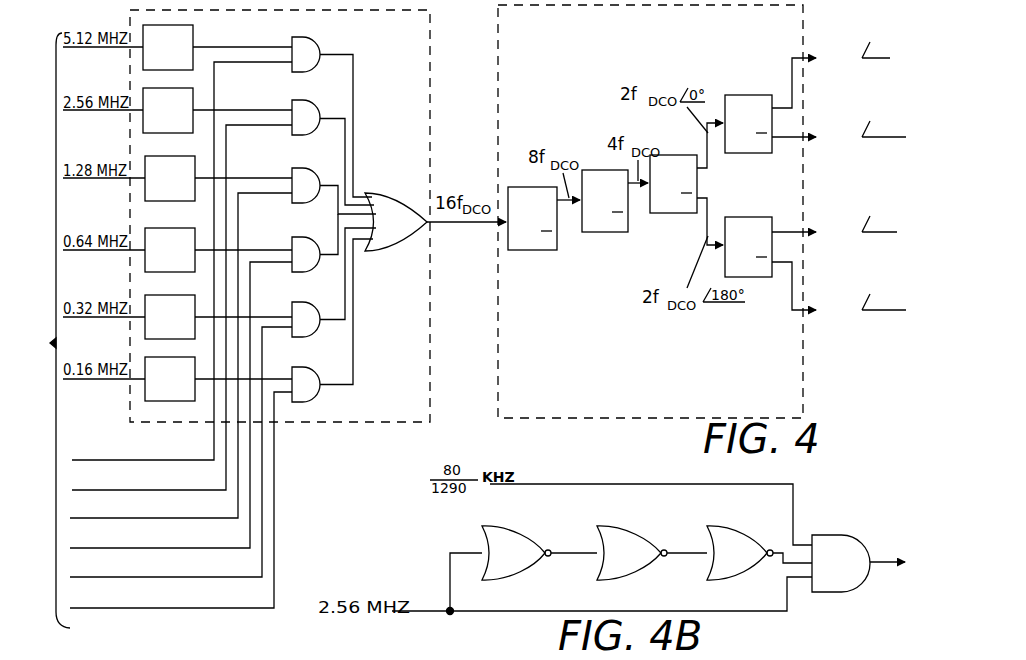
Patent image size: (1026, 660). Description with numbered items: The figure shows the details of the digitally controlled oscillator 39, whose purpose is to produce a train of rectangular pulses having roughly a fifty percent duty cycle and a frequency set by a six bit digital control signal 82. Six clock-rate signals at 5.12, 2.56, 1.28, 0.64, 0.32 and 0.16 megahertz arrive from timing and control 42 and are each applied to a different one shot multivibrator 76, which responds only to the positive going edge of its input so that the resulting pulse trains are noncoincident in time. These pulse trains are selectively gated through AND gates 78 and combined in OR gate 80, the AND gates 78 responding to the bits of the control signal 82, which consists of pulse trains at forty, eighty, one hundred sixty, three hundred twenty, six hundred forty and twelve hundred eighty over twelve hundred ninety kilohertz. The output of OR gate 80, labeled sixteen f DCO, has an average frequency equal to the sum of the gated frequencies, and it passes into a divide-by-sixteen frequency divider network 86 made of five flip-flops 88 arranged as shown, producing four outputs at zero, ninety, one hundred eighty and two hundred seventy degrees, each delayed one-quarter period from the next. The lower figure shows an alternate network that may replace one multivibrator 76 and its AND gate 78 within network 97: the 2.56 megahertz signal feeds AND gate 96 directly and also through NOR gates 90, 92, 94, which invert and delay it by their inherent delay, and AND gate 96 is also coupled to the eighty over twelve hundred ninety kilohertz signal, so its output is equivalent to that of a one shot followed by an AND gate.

In FIG. 4, the digitally controlled oscillator 39 is at (118, 17).
In FIG. 4, the timing and control 42 is at (49, 330).
In FIG. 4, the one shot multivibrator 76 is at (193, 40).
In FIG. 4, the AND gate 78 is at (312, 37).
In FIG. 4, the OR gate 80 is at (385, 193).
In FIG. 4B, the OR gate 80 is at (929, 568).
In FIG. 4, the six bit digital control signal 82 is at (281, 437).
In FIG. 4, the frequency divider network 86 is at (807, 36).
In FIG. 4, the flip-flop 88 is at (536, 250).
In FIG. 4, the network 97 is at (436, 77).
In FIG. 4B, the NOR gate 90 is at (505, 577).
In FIG. 4B, the NOR gate 92 is at (628, 577).
In FIG. 4B, the NOR gate 94 is at (730, 577).
In FIG. 4B, the AND gate 96 is at (844, 592).